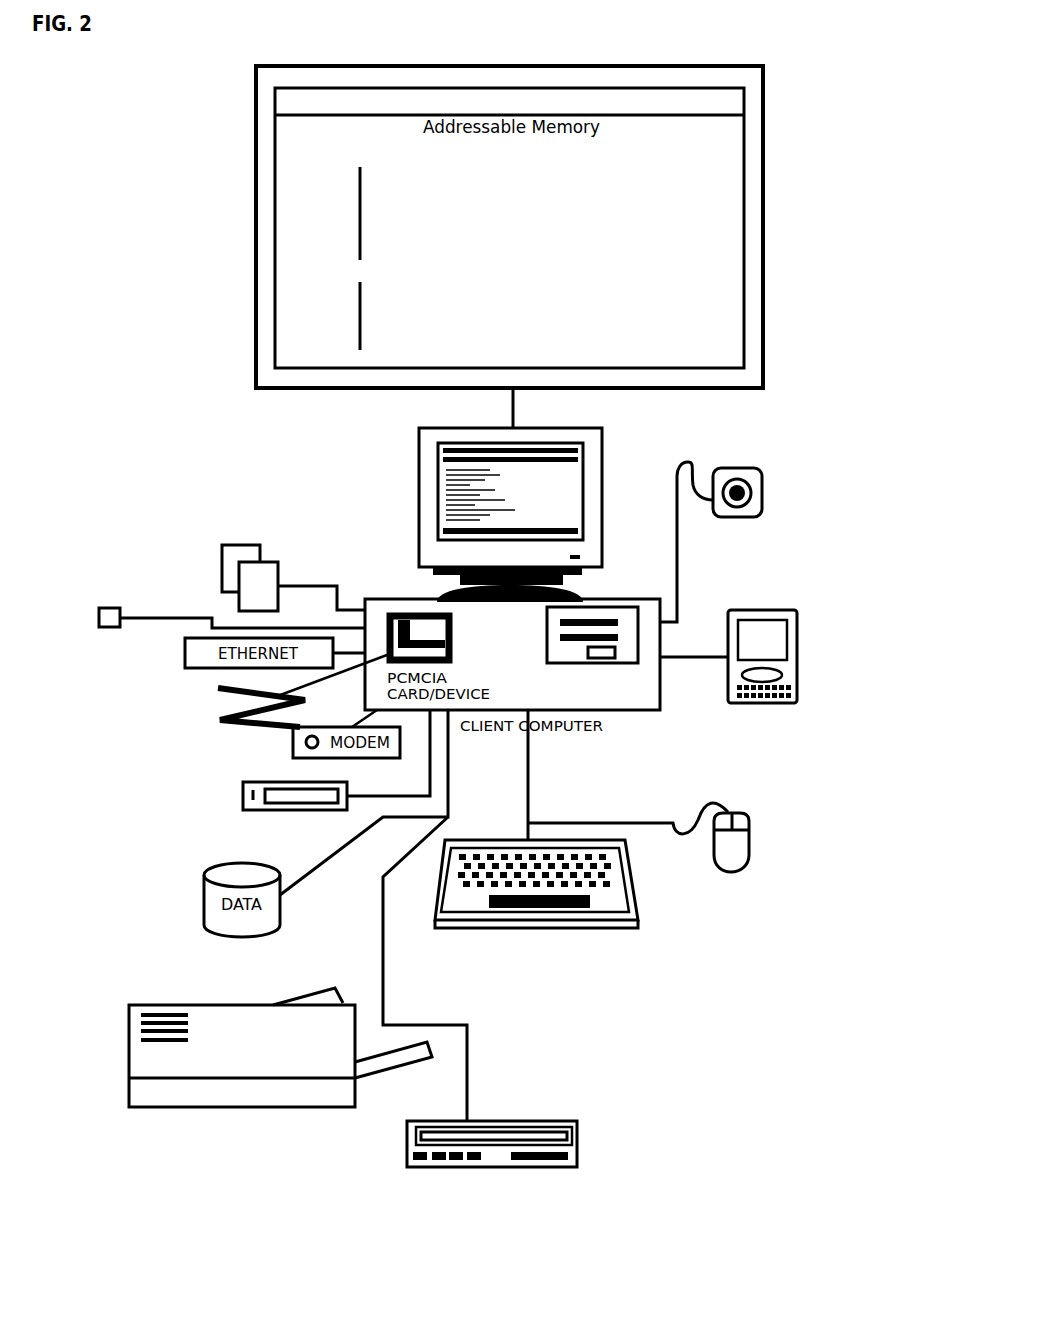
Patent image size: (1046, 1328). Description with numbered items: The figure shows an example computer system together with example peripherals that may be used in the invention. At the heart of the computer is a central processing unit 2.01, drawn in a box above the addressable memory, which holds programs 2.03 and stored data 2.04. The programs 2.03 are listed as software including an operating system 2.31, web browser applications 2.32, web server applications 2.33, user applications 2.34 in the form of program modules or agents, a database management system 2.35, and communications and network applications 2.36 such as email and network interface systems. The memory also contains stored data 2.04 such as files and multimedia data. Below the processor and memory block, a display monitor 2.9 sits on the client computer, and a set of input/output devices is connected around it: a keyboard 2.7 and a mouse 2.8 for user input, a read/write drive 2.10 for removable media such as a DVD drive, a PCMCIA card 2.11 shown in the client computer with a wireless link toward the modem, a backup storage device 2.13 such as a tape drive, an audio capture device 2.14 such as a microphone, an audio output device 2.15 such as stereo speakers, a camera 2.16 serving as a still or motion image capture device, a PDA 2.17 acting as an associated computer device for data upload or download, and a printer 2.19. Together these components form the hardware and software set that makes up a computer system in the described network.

The central processing unit 2.01 is at (337, 108).
The programs 2.03 is at (337, 215).
The stored data 2.04 is at (337, 319).
The operating system 2.31 is at (720, 177).
The web browser applications 2.32 is at (695, 194).
The web server applications 2.33 is at (575, 211).
The user applications 2.34 is at (618, 228).
The database management system 2.35 is at (462, 245).
The communications and network applications 2.36 is at (700, 262).
The keyboard 2.7 is at (617, 935).
The mouse 2.8 is at (825, 836).
The display monitor 2.9 is at (605, 455).
The read/write drive 2.10 is at (547, 1173).
The PCMCIA card 2.11 is at (222, 716).
The backup storage device 2.13 is at (242, 798).
The audio capture device 2.14 is at (108, 635).
The audio output device 2.15 is at (232, 542).
The camera 2.16 is at (767, 472).
The PDA 2.17 is at (798, 631).
The printer 2.19 is at (129, 1059).